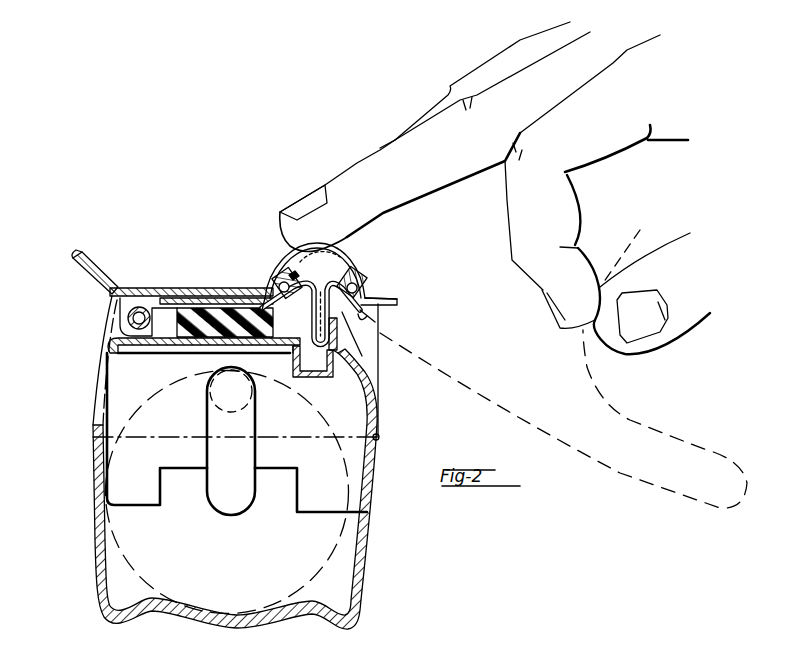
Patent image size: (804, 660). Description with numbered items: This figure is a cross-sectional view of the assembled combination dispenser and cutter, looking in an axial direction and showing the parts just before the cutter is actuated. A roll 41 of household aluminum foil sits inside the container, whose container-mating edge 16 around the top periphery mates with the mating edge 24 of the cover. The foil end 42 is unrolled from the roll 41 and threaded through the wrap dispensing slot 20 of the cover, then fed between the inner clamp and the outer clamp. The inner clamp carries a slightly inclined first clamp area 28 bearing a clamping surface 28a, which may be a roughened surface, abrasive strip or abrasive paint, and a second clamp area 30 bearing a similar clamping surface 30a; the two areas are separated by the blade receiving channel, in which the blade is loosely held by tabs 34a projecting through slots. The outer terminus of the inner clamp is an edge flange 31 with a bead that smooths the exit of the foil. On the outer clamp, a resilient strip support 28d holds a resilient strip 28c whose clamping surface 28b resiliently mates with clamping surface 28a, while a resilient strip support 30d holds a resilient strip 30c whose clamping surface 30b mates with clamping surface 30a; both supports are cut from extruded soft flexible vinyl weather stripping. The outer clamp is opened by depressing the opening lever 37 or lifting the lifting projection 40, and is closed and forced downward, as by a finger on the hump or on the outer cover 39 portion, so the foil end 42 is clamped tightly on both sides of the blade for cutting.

The container-mating edge 16 is at (364, 438).
The wrap dispensing slot 20 is at (95, 386).
The mating edge 24 is at (373, 437).
The first clamp area 28 is at (311, 330).
The clamping surface 28a is at (292, 366).
The clamping surface 28b is at (291, 279).
The resilient strip 28c is at (280, 272).
The resilient strip support 28d is at (272, 296).
The clamp area 30 is at (365, 338).
The clamping surface 30a is at (366, 318).
The clamping surface 30b is at (333, 260).
The resilient strip 30c is at (366, 295).
The resilient strip support 30d is at (403, 296).
The edge flange 31 is at (384, 338).
The tabs 34a is at (330, 374).
The opening lever 37 is at (75, 260).
The outer cover 39 is at (187, 288).
The lifting projection 40 is at (404, 301).
The roll 41 is at (337, 553).
The end 42 is at (608, 476).